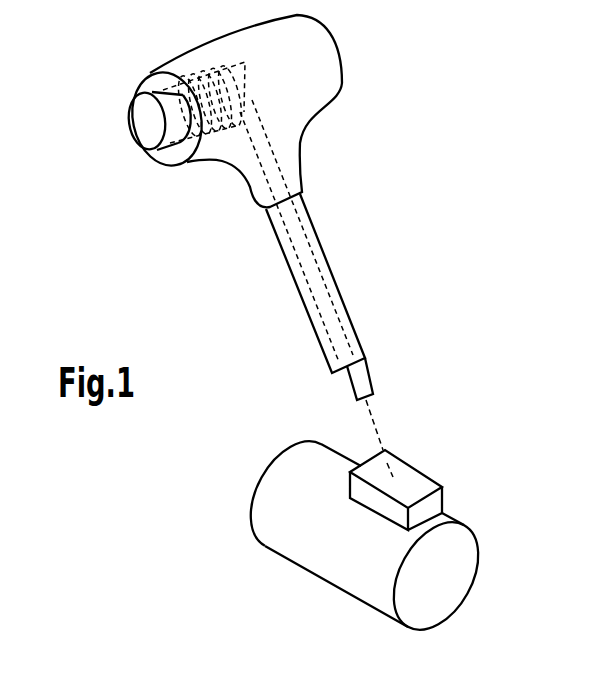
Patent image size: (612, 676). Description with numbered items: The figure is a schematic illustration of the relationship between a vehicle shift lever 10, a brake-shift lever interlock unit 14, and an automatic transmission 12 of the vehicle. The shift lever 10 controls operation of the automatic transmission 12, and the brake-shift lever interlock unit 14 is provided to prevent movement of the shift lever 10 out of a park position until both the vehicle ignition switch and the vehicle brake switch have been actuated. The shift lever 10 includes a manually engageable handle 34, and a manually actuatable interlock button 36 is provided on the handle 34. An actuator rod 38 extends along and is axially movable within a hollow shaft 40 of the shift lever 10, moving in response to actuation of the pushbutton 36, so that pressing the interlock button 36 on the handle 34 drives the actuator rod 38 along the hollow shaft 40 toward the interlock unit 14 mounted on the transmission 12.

The shift lever 10 is at (387, 225).
The automatic transmission 12 is at (298, 533).
The brake-shift lever interlock unit 14 is at (417, 482).
The handle 34 is at (322, 58).
The interlock button 36 is at (145, 122).
The actuator rod 38 is at (357, 382).
The hollow shaft 40 is at (297, 289).